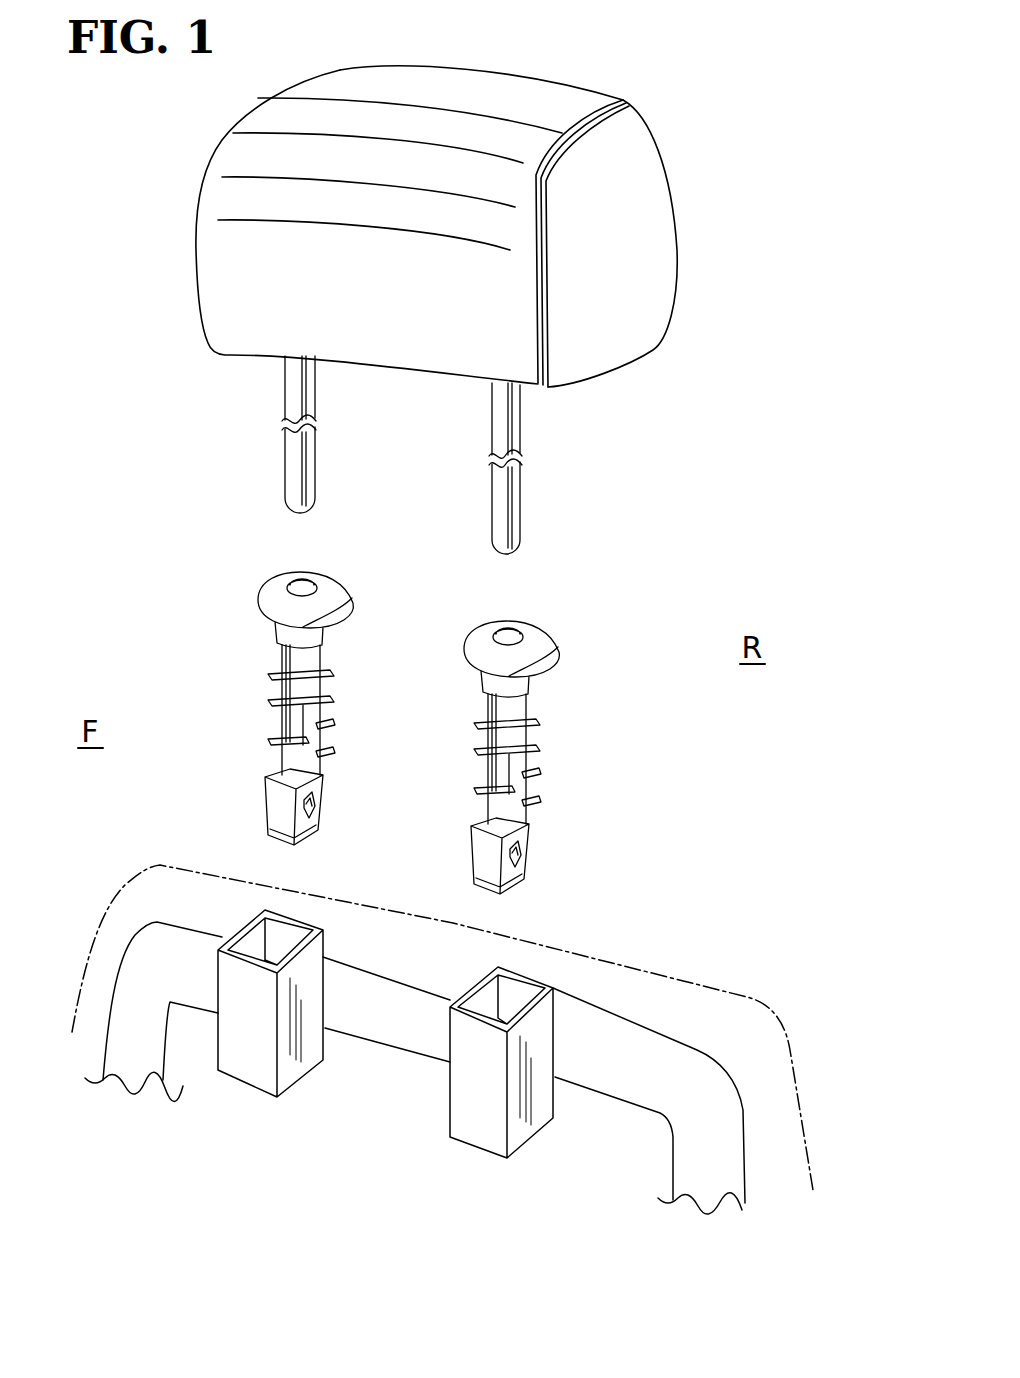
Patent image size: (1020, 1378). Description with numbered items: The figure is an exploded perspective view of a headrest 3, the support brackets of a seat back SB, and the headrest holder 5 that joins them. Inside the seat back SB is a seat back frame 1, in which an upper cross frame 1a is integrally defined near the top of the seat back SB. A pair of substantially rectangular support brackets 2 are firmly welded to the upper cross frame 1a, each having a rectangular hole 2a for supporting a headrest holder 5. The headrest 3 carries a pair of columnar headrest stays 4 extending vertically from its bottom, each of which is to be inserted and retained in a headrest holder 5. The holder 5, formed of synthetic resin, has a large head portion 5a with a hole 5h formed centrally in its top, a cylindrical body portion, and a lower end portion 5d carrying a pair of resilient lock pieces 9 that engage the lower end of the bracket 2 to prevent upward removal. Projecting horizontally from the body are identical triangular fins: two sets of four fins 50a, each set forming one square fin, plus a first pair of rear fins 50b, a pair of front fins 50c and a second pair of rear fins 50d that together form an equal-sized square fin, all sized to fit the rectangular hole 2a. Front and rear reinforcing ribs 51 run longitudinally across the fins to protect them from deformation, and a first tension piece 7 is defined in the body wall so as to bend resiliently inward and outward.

The seat back frame 1 is at (445, 1068).
The upper cross frame 1a is at (625, 1083).
The support bracket 2 is at (411, 1024).
The rectangular hole 2a is at (290, 945).
The headrest 3 is at (648, 200).
The headrest stay 4 is at (298, 465).
The headrest holder 5 is at (196, 616).
The head portion 5a is at (342, 585).
The hole 5h is at (304, 583).
The lower end portion 5d is at (326, 787).
The first tension piece 7 is at (278, 718).
The lock piece 9 is at (318, 808).
The reinforcing rib 51 is at (280, 650).
The set of four triangular fins 50a is at (262, 700).
The first pair of rear triangular fins 50b is at (328, 723).
The pair of front triangular fins 50c is at (272, 744).
The second pair of rear triangular fins 50d is at (328, 752).
The seat back SB is at (687, 940).